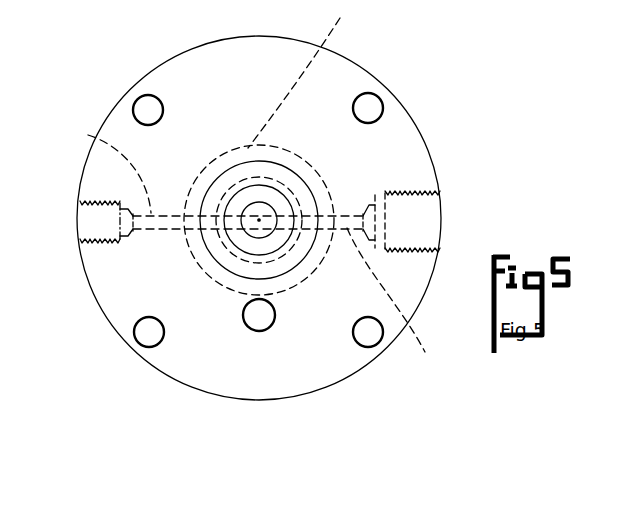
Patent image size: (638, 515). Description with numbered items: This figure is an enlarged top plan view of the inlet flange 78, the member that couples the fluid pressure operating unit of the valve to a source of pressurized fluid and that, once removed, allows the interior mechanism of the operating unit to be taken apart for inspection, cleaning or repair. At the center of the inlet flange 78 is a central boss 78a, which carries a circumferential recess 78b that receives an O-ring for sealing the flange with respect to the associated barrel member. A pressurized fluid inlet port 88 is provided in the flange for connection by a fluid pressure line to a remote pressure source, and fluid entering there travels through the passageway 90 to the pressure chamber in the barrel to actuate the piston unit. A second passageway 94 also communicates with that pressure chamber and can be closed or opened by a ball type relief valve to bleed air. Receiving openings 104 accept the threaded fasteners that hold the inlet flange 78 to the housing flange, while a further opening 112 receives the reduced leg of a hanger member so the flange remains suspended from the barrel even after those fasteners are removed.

The inlet flange 78 is at (431, 150).
The central boss 78a is at (286, 203).
The circumferential recess 78b is at (309, 74).
The passageway 90 is at (300, 202).
The passageway 94 is at (90, 135).
The pressurized fluid inlet port 88 is at (427, 248).
The receiving openings 104 is at (148, 97).
The opening 112 is at (258, 333).